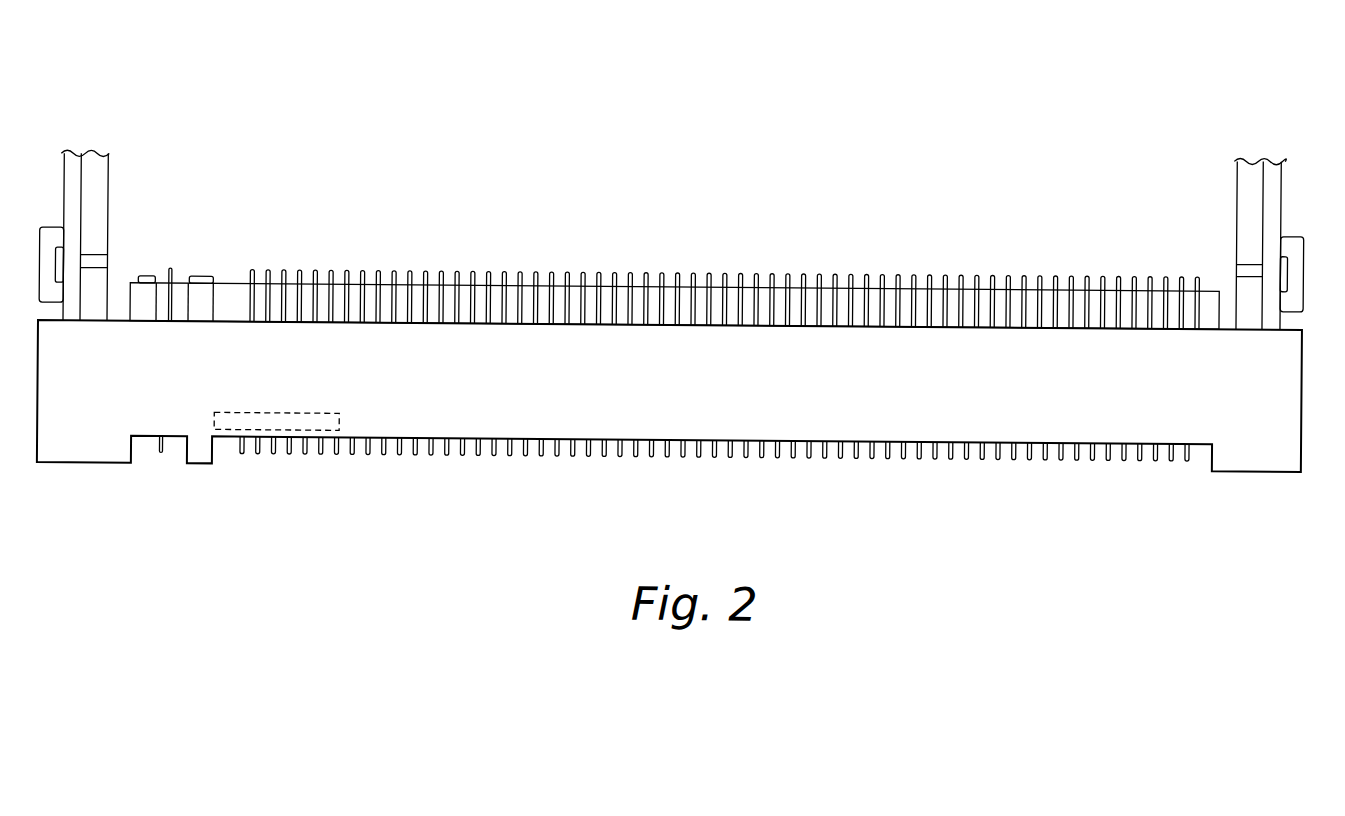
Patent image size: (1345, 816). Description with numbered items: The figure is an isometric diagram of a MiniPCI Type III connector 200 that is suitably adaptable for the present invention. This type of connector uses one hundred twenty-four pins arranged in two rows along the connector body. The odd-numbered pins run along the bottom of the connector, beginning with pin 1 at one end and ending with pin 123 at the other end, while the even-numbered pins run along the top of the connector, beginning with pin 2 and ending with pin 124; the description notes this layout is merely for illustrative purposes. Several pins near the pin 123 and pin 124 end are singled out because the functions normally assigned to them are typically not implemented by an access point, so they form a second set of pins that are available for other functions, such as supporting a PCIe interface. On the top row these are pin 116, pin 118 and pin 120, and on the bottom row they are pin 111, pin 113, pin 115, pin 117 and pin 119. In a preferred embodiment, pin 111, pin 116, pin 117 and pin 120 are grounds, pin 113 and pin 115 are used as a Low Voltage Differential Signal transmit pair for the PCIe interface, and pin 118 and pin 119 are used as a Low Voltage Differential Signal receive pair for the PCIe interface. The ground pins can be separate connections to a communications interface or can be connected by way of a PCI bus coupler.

The MiniPCI Type III connector 200 is at (424, 119).
The pin 1 is at (158, 465).
The pin 2 is at (174, 255).
The pin 111 is at (1084, 462).
The pin 113 is at (1104, 466).
The pin 115 is at (1122, 467).
The pin 116 is at (1126, 260).
The pin 117 is at (1144, 467).
The pin 118 is at (1144, 258).
The pin 119 is at (1162, 466).
The pin 120 is at (1165, 256).
The pin 123 is at (1198, 462).
The pin 124 is at (1196, 256).